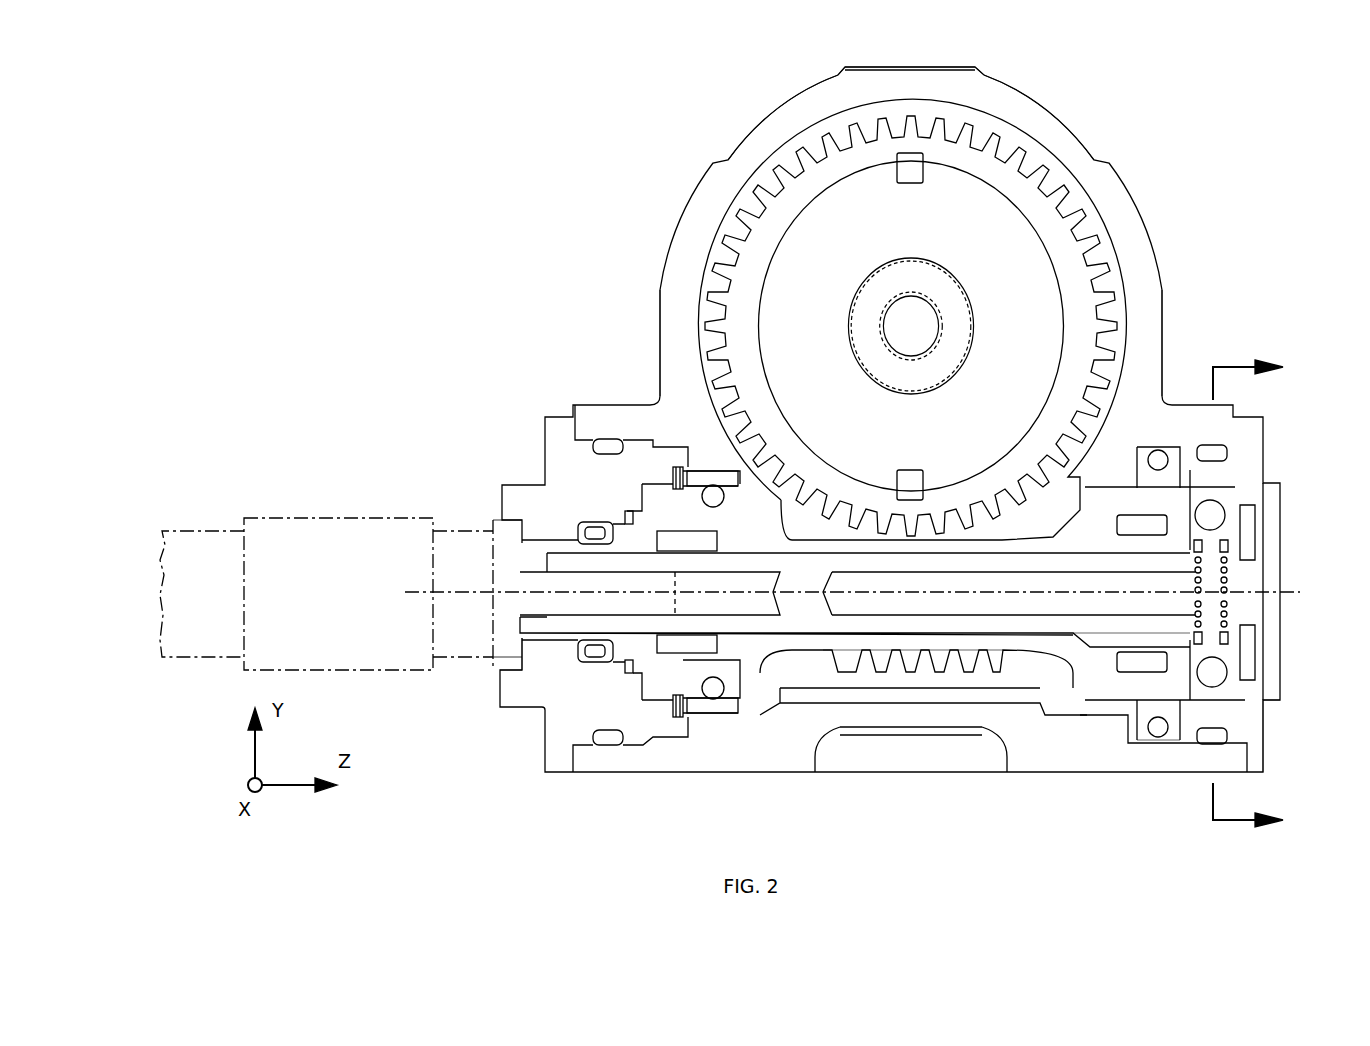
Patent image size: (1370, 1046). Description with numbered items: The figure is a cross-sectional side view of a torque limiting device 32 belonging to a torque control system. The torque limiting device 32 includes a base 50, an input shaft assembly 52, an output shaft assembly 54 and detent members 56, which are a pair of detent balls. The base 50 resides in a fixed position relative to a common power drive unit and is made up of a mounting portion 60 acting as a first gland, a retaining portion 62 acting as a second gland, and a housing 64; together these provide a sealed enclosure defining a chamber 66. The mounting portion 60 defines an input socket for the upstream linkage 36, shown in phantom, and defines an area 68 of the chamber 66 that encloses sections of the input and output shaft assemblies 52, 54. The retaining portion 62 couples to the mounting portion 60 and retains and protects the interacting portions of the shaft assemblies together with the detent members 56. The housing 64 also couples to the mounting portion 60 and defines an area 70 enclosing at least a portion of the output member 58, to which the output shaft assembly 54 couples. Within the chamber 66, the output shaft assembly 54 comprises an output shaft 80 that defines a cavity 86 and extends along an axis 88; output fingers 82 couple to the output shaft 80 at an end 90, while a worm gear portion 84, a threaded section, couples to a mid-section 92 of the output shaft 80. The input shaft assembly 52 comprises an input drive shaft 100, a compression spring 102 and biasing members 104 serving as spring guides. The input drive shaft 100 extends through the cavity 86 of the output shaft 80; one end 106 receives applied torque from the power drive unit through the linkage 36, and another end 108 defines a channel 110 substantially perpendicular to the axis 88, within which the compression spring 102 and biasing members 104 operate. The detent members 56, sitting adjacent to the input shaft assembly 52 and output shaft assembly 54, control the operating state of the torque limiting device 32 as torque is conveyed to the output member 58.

The torque limiting device 32 is at (296, 132).
The linkage 36 is at (326, 594).
The base 50 is at (612, 772).
The input shaft assembly 52 is at (1054, 630).
The output shaft assembly 54 is at (1077, 673).
The detent members 56 is at (1224, 512).
The output member 58 is at (910, 326).
The mounting portion 60 is at (560, 772).
The retaining portion 62 is at (1258, 727).
The housing 64 is at (868, 75).
The chamber 66 is at (746, 482).
The area 68 is at (530, 637).
The area 70 is at (930, 110).
The output shaft 80 is at (808, 640).
The output fingers 82 is at (1250, 703).
The worm gear portion 84 is at (853, 667).
The cavity 86 is at (776, 640).
The axis 88 is at (427, 594).
The end 90 is at (1176, 703).
The mid-section 92 is at (894, 650).
The input drive shaft 100 is at (621, 566).
The compression spring 102 is at (1226, 613).
The biasing members 104 is at (1226, 537).
The end 106 is at (510, 535).
The end 108 is at (1187, 513).
The channel 110 is at (1226, 575).